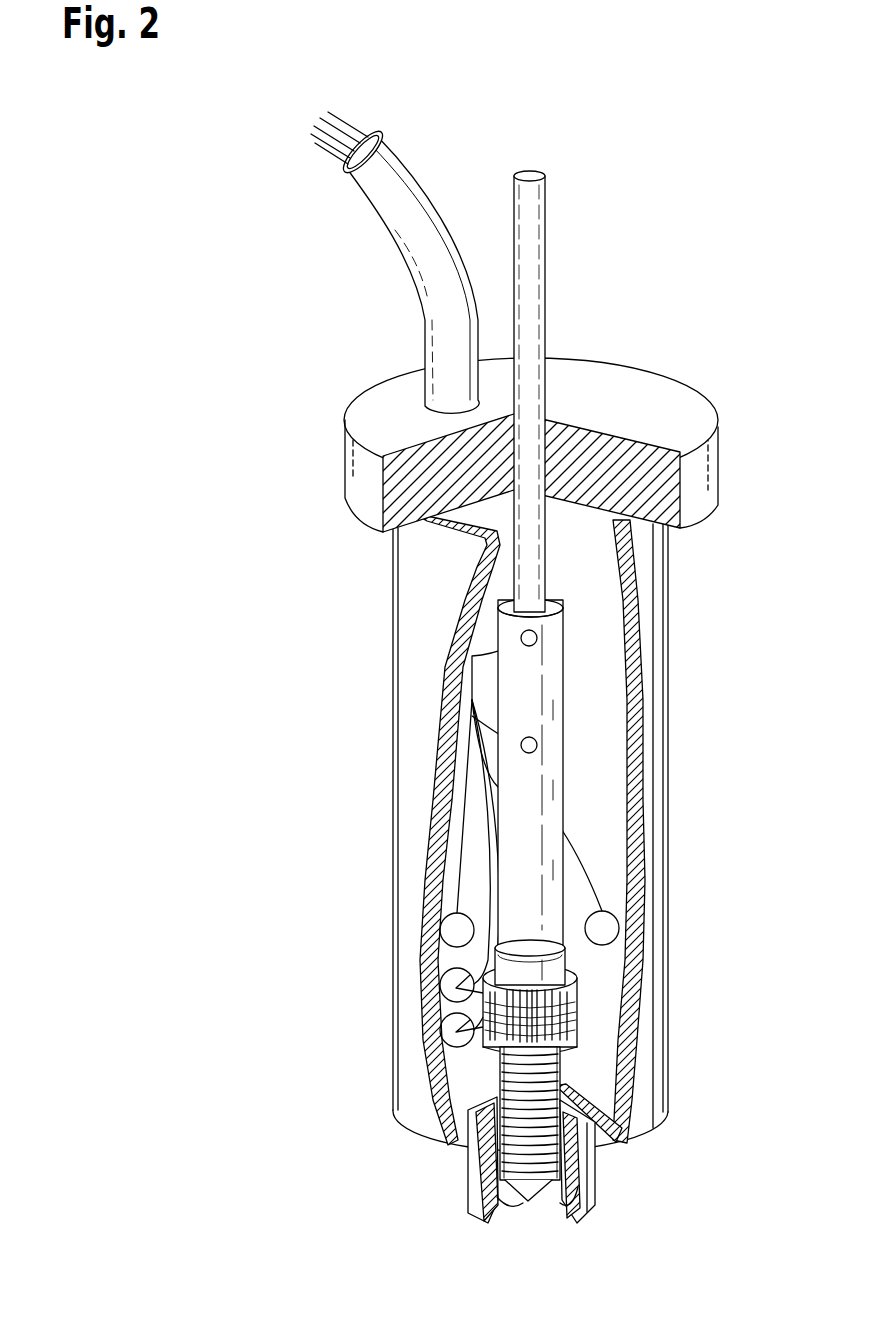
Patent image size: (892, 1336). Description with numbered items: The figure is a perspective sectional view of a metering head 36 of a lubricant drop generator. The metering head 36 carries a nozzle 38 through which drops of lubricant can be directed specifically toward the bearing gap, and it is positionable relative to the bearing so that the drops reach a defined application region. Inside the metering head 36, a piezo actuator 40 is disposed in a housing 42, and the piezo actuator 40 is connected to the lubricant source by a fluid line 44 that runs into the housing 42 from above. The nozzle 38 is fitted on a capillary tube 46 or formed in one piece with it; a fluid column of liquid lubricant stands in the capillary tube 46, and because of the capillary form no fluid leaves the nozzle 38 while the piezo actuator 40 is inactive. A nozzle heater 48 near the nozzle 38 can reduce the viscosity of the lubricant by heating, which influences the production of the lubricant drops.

The metering head 36 is at (350, 714).
The nozzle 38 is at (532, 1192).
The piezo actuator 40 is at (548, 828).
The housing 42 is at (415, 828).
The fluid line 44 is at (530, 267).
The capillary tube 46 is at (575, 1094).
The nozzle heater 48 is at (500, 1157).